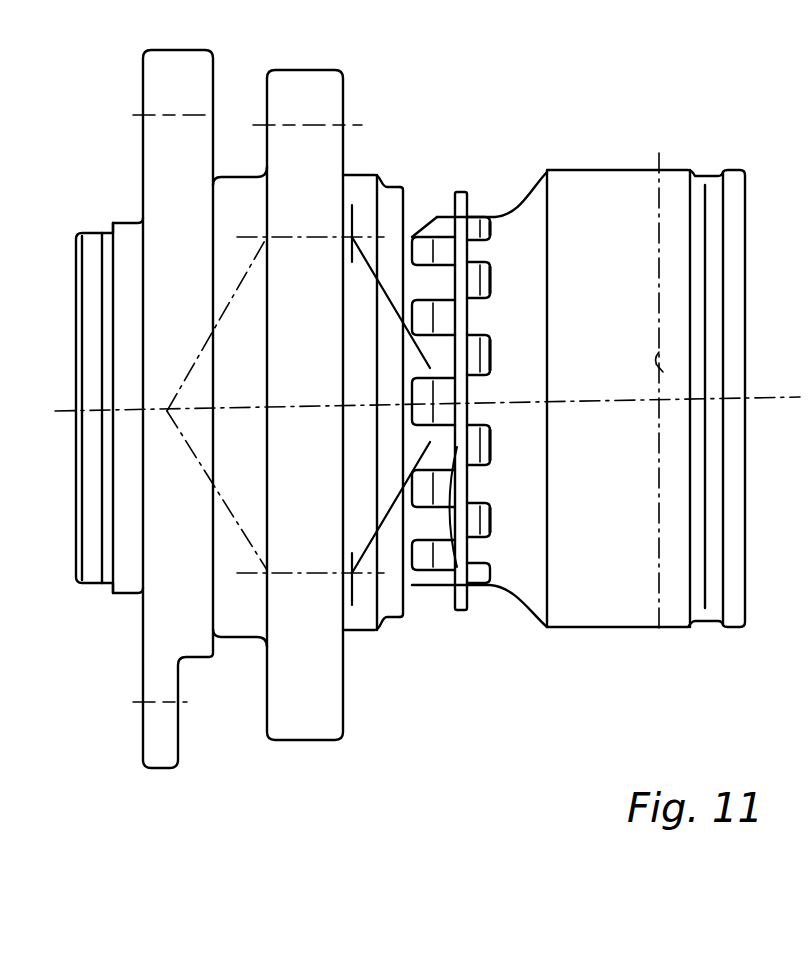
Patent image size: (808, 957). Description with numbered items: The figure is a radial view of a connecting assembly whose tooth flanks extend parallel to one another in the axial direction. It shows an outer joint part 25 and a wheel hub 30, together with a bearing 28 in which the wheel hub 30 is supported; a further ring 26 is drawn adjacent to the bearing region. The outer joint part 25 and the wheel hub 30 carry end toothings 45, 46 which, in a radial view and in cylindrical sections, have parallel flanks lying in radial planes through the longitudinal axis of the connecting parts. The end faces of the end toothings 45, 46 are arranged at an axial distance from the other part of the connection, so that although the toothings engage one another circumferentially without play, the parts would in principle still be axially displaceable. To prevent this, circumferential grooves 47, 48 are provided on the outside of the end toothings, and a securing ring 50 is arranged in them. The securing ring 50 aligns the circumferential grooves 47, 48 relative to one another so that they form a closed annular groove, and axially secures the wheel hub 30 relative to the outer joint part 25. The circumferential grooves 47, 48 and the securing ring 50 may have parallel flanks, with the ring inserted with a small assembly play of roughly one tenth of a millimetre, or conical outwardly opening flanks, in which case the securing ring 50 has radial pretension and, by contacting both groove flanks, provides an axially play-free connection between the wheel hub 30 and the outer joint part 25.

The outer joint part 25 is at (595, 190).
The ring gear 26 is at (412, 237).
The bearing 28 is at (362, 187).
The wheel hub 30 is at (132, 232).
The end toothing 45 is at (490, 540).
The end toothing 46 is at (430, 438).
The circumferential groove 47 is at (477, 492).
The circumferential groove 48 is at (422, 440).
The securing ring 50 is at (458, 612).